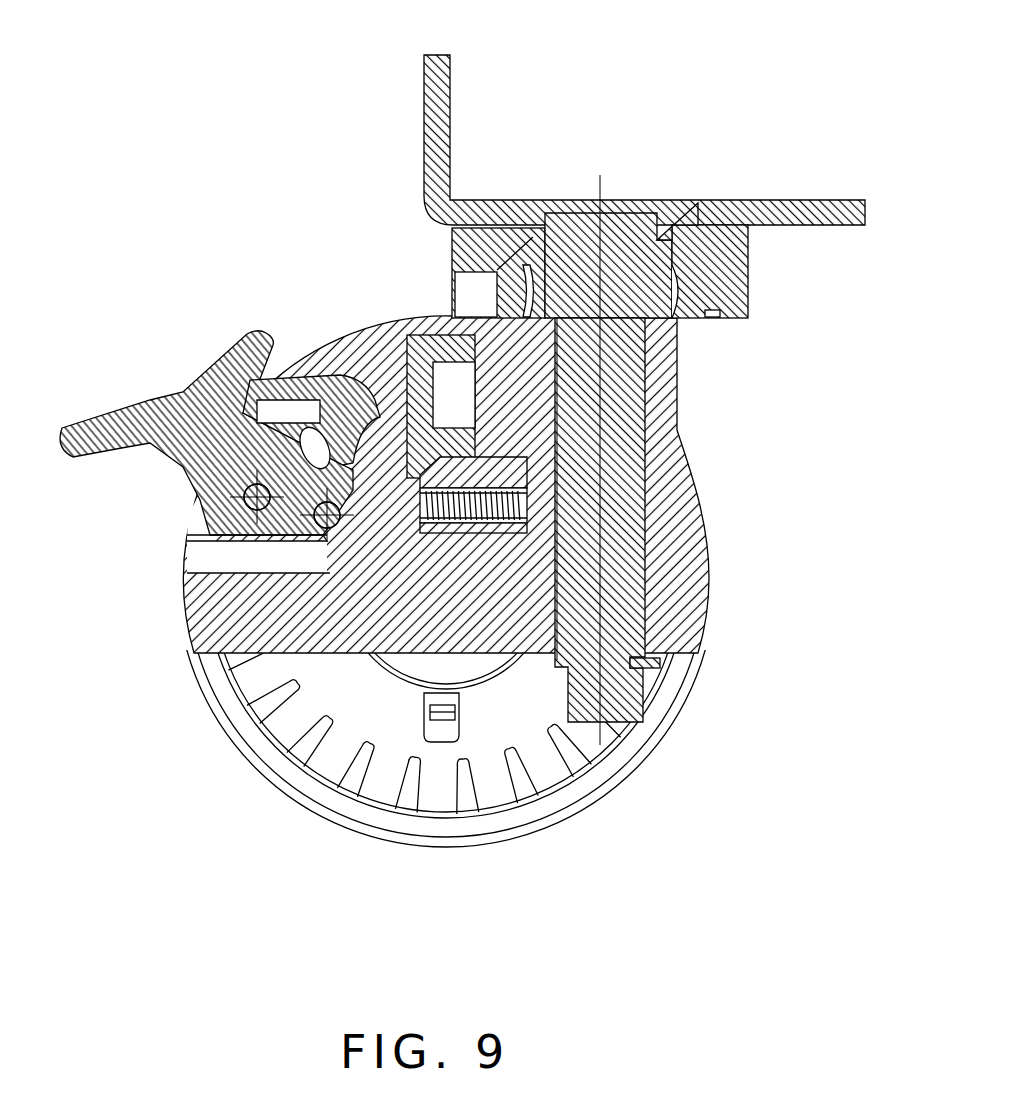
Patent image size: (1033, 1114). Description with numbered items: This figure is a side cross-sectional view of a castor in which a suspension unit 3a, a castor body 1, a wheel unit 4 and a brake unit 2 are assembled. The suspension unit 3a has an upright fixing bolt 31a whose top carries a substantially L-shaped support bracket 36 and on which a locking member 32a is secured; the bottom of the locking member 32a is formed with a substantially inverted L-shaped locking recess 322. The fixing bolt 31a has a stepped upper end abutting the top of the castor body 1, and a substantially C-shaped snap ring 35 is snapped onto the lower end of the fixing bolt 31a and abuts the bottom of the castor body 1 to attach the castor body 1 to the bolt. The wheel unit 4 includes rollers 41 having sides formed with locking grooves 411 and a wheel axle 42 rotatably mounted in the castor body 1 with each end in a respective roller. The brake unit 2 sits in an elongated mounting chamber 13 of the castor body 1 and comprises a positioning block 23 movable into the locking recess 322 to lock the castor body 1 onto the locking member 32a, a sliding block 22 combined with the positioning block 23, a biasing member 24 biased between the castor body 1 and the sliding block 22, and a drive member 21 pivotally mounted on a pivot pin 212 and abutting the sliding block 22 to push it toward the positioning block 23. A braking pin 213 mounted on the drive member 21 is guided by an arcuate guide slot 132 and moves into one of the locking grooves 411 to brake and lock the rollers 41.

The castor body 1 is at (152, 656).
The brake unit 2 is at (210, 406).
The suspension unit 3a is at (655, 160).
The wheel unit 4 is at (446, 620).
The mounting chamber 13 is at (309, 357).
The drive member 21 is at (157, 415).
The sliding block 22 is at (507, 473).
The positioning block 23 is at (427, 345).
The biasing member 24 is at (520, 516).
The fixing bolt 31a is at (566, 228).
The locking member 32a is at (748, 272).
The snap ring 35 is at (646, 663).
The support bracket 36 is at (732, 218).
The rollers 41 is at (480, 830).
The wheel axle 42 is at (443, 612).
The arcuate guide slot 132 is at (318, 440).
The pivot pin 212 is at (237, 486).
The braking pin 213 is at (313, 538).
The locking recess 322 is at (470, 297).
The locking grooves 411 is at (358, 782).